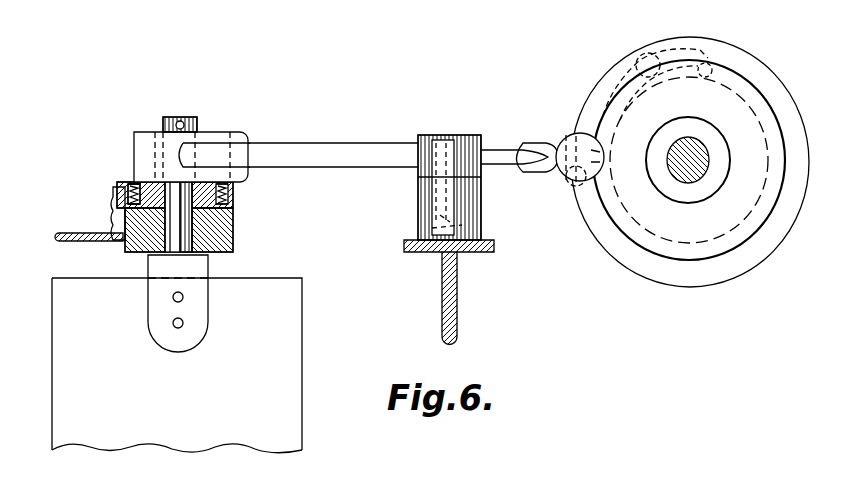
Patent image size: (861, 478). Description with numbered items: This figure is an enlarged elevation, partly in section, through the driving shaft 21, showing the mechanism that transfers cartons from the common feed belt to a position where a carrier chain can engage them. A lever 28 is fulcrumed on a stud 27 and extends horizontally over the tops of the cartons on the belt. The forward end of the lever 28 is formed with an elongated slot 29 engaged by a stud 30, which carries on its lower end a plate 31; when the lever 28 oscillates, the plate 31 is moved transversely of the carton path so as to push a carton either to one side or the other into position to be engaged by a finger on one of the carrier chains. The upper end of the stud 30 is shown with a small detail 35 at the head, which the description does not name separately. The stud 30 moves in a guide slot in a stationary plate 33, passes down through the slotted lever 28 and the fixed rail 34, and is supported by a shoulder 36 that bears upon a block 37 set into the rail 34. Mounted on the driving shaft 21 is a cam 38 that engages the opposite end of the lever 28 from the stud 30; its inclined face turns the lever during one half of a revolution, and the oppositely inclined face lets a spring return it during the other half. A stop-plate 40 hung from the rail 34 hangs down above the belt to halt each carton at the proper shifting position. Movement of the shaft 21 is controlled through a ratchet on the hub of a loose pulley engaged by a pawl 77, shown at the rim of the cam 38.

The driving shaft 21 is at (693, 153).
The stud 27 is at (438, 195).
The lever 28 is at (348, 134).
The elongated slot 29 is at (217, 137).
The stud 30 is at (197, 116).
The plate 31 is at (278, 320).
The stationary plate 33 is at (147, 181).
The fixed rail 34 is at (233, 248).
The pin hole 35 is at (175, 124).
The shoulder 36 is at (232, 223).
The block 37 is at (197, 223).
The cam 38 is at (788, 58).
The stop-plate 40 is at (83, 226).
The pawl 77 is at (660, 47).